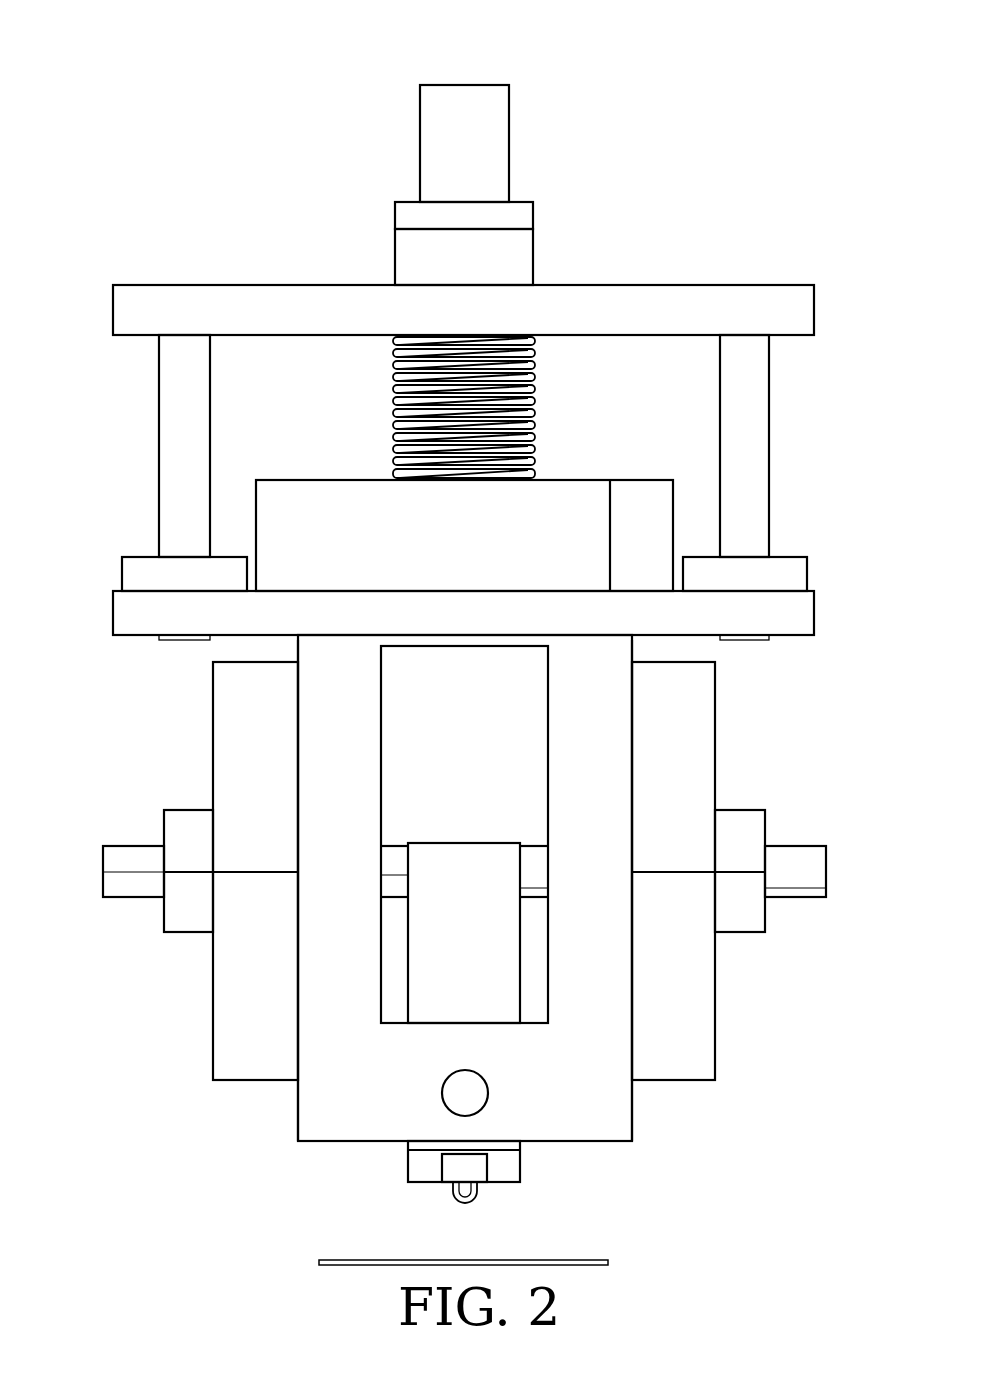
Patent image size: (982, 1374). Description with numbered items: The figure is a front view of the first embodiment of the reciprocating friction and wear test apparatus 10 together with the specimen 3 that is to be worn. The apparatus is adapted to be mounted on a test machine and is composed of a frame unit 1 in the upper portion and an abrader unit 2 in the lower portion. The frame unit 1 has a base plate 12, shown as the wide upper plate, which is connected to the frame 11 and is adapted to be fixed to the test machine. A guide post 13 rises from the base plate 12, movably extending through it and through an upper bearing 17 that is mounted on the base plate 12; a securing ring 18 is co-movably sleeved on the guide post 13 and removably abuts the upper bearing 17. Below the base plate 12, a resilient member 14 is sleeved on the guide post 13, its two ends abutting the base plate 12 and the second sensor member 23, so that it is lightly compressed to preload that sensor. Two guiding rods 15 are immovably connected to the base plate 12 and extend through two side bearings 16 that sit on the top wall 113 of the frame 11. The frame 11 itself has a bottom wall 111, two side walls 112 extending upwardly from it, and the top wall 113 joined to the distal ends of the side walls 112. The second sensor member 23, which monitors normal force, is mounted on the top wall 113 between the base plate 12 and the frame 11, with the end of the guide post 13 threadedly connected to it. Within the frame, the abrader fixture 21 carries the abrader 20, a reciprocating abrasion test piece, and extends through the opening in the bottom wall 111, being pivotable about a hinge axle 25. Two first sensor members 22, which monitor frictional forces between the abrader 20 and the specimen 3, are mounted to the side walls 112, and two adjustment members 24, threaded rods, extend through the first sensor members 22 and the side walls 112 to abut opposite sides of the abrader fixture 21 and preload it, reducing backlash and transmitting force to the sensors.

The reciprocating friction and wear test apparatus 10 is at (780, 130).
The frame unit 1 is at (814, 276).
The abrader unit 2 is at (725, 1085).
The specimen 3 is at (608, 1262).
The frame 11 is at (293, 1145).
The base plate 12 is at (660, 285).
The guide post 13 is at (465, 85).
The resilient member 14 is at (393, 391).
The guiding rods 15 is at (159, 432).
The side bearings 16 is at (122, 575).
The upper bearing 17 is at (400, 252).
The securing ring 18 is at (400, 210).
The abrader 20 is at (468, 1193).
The abrader fixture 21 is at (465, 843).
The first sensor members 22 is at (223, 1037).
The second sensor member 23 is at (610, 480).
The adjustment members 24 is at (103, 862).
The hinge axle 25 is at (468, 1095).
The bottom wall 111 is at (355, 1128).
The side walls 112 is at (314, 742).
The top wall 113 is at (815, 612).